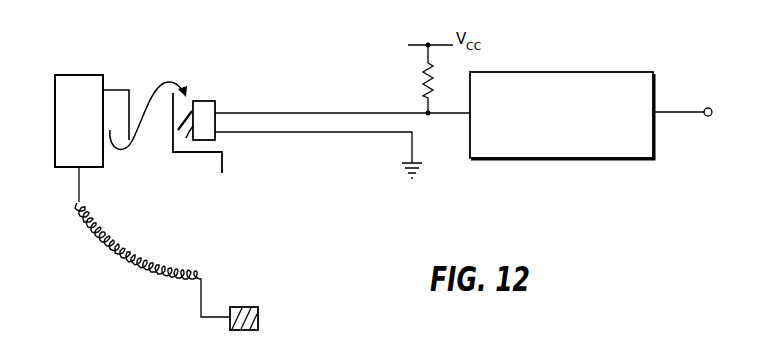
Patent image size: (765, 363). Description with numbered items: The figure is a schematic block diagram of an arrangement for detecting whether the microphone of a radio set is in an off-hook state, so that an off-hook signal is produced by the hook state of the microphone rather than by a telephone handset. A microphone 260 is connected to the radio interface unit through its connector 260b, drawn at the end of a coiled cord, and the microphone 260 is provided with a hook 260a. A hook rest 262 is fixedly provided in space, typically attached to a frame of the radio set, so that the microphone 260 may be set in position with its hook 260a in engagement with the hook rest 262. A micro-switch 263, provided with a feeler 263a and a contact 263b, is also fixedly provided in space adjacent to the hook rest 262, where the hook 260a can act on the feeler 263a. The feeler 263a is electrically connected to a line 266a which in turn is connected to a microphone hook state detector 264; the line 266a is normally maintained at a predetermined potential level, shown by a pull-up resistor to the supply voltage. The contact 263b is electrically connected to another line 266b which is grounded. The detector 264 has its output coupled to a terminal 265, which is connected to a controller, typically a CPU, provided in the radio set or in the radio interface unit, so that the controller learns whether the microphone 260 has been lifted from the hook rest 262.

The microphone 260 is at (67, 75).
The hook 260a is at (120, 88).
The connector 260b is at (258, 308).
The hook rest 262 is at (208, 153).
The micro-switch 263 is at (210, 108).
The feeler 263a is at (188, 110).
The contact 263b is at (190, 133).
The microphone hook state detector 264 is at (577, 71).
The terminal 265 is at (706, 108).
The line 266a is at (300, 113).
The line 266b is at (290, 134).